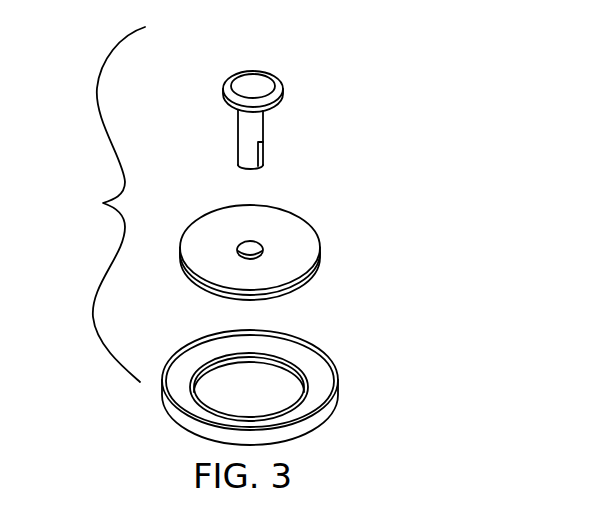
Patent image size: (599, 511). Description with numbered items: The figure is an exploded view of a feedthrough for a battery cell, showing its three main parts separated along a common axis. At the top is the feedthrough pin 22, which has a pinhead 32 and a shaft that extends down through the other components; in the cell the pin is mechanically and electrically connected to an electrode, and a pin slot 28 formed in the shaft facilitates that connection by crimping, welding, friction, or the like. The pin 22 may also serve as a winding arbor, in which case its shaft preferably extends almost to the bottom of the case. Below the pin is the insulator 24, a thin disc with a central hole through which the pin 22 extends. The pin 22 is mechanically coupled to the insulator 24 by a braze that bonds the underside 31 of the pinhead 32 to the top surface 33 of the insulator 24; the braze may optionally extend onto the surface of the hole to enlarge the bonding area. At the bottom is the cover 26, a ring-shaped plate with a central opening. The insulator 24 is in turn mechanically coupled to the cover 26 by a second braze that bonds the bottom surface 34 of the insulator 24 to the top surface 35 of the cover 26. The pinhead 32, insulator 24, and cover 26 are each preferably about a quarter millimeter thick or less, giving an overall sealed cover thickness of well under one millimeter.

The feedthrough pin 22 is at (261, 97).
The pinhead 32 is at (272, 80).
The underside of pinhead 31 is at (224, 132).
The pin slot 28 is at (264, 153).
The insulator 24 is at (272, 242).
The top surface of insulator 33 is at (210, 216).
The bottom surface of insulator 34 is at (322, 292).
The cover 26 is at (286, 392).
The top surface of cover 35 is at (320, 350).